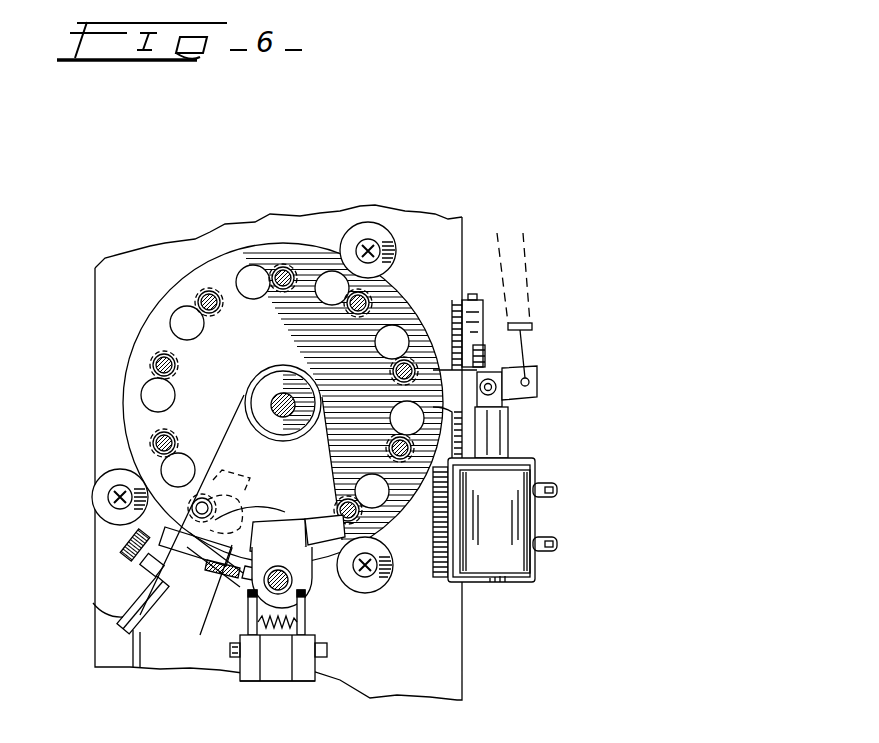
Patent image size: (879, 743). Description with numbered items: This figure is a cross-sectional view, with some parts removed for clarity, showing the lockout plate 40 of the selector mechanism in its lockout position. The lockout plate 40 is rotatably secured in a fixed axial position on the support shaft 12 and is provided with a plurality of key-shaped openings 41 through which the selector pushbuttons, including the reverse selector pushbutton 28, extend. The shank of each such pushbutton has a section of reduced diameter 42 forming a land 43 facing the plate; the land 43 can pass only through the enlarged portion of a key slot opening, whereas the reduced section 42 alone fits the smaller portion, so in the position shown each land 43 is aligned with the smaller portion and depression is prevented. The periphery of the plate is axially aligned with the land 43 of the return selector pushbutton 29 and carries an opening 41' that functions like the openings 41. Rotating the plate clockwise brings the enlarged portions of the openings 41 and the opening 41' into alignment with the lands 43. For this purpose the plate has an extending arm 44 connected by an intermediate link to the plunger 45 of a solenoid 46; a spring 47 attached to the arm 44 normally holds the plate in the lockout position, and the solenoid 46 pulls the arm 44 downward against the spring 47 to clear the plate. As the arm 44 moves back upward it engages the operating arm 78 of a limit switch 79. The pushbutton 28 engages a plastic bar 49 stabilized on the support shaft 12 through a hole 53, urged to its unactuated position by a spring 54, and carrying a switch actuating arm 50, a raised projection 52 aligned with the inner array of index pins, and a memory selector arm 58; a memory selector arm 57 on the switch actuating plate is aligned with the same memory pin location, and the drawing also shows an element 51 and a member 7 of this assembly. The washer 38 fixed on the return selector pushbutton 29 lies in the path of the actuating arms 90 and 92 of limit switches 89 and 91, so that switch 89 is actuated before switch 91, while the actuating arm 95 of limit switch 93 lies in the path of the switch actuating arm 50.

The pawl arm 7 is at (278, 475).
The support shaft 12 is at (323, 400).
The selector pushbutton 28 is at (230, 480).
The return selector pushbutton 29 is at (265, 522).
The support washer 38 is at (277, 658).
The lockout plate 40 is at (140, 312).
The key-shaped openings 41 is at (282, 370).
The opening 41' is at (301, 580).
The section of reduced diameter 42 is at (290, 276).
The land 43 is at (212, 312).
The extending arm 44 is at (540, 380).
The plunger 45 is at (508, 446).
The solenoid 46 is at (537, 522).
The spring 47 is at (526, 323).
The plastic bar 49 is at (324, 467).
The switch actuating arm 50 is at (206, 556).
The sector 51 is at (278, 536).
The raised projection 52 is at (325, 530).
The hole 53 is at (272, 404).
The spring 54 is at (301, 350).
The memory selector arm 57 is at (222, 572).
The memory selector arm 58 is at (248, 582).
The operating arm 78 is at (486, 366).
The limit switch 79 is at (478, 325).
The limit switch 89 is at (246, 672).
The actuating arm 90 is at (221, 651).
The limit switch 91 is at (306, 675).
The actuating arm 92 is at (308, 618).
The limit switch 93 is at (124, 601).
The actuating arm 95 is at (148, 574).